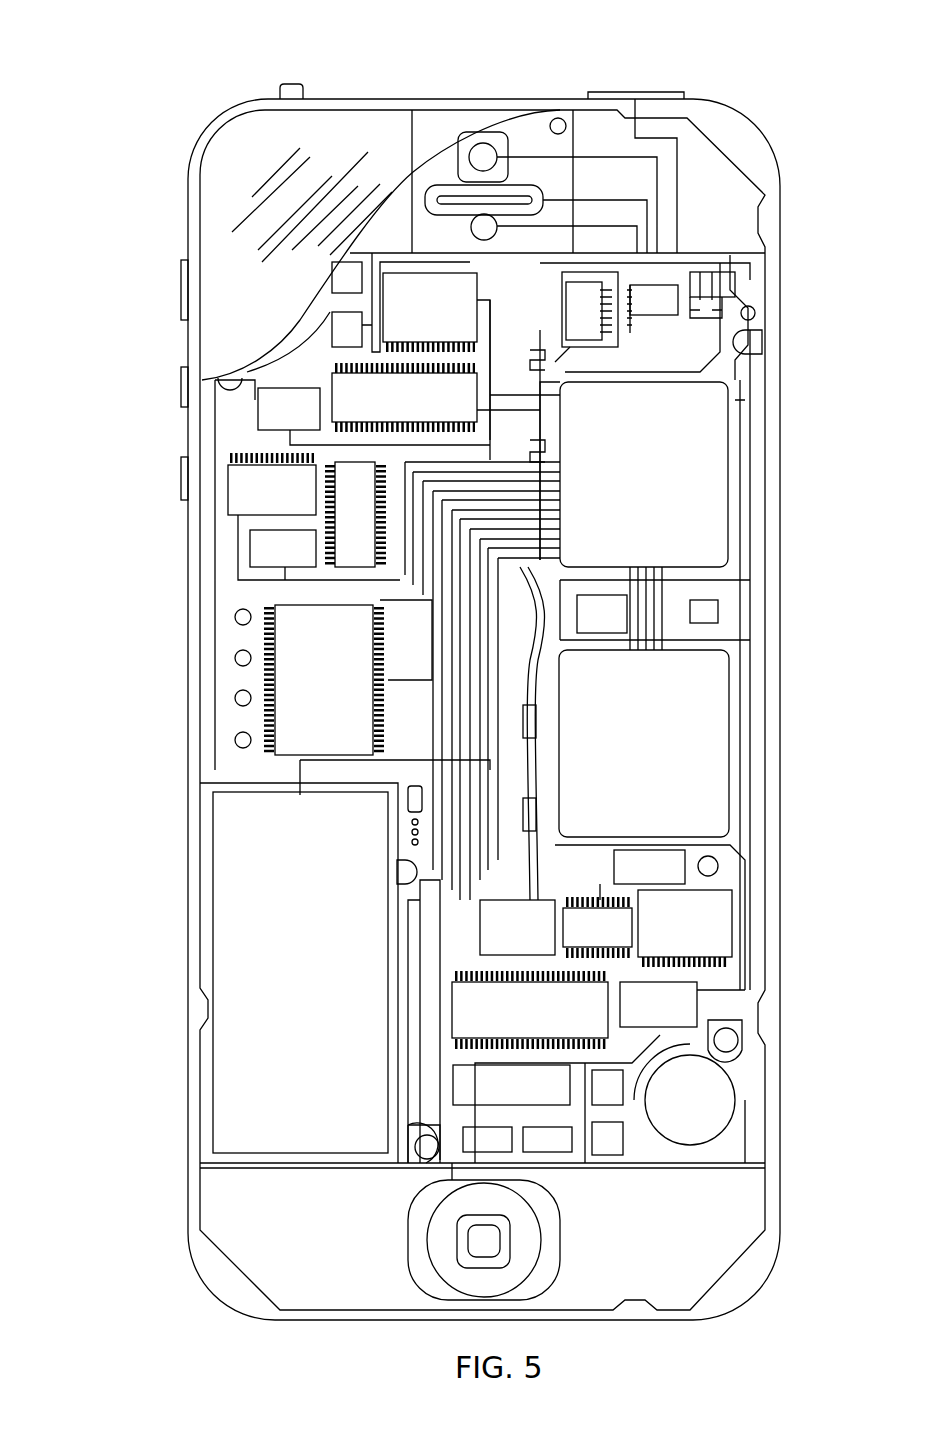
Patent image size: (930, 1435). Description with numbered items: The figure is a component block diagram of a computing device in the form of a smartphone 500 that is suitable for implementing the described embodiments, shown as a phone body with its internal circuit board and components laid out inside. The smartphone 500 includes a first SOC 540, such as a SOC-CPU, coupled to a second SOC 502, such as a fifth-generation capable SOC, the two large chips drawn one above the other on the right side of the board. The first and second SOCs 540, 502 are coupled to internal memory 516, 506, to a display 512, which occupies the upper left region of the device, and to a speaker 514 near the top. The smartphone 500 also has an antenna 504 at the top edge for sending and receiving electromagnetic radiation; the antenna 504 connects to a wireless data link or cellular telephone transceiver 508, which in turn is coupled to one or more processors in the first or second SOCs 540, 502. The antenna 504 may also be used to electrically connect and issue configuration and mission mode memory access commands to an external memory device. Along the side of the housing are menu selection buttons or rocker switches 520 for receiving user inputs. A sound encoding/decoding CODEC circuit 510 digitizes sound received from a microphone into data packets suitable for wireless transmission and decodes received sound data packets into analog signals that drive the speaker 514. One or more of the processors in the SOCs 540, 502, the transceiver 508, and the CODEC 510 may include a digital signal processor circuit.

The smartphone 500 is at (100, 50).
The second SOC 502 is at (644, 743).
The antenna 504 is at (588, 95).
The internal memory 506 is at (404, 397).
The wireless data link or cellular telephone transceiver 508 is at (683, 285).
The sound encoding/decoding (CODEC) circuit 510 is at (430, 310).
The display 512 is at (215, 210).
The speaker 514 is at (440, 185).
The internal memory 516 is at (530, 1010).
The menu selection buttons or rocker switches 520 is at (181, 382).
The first SOC 540 is at (644, 474).